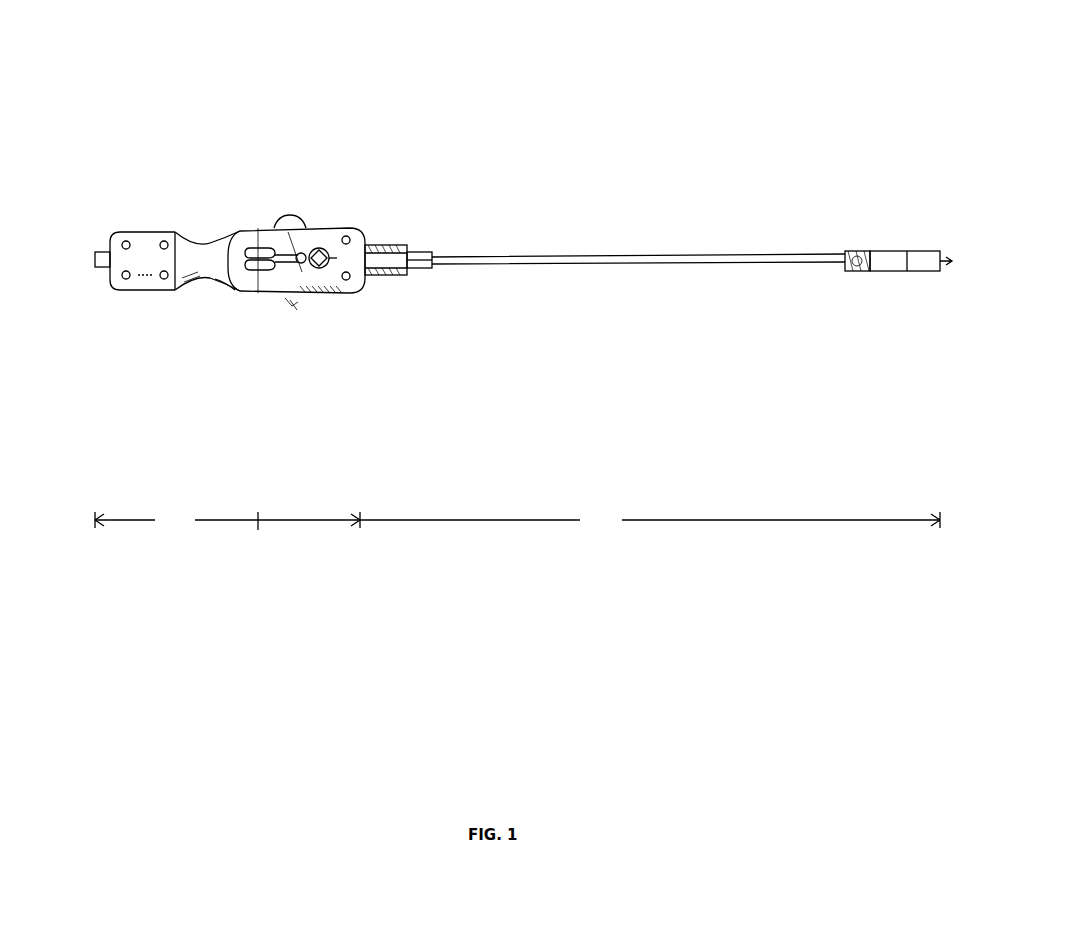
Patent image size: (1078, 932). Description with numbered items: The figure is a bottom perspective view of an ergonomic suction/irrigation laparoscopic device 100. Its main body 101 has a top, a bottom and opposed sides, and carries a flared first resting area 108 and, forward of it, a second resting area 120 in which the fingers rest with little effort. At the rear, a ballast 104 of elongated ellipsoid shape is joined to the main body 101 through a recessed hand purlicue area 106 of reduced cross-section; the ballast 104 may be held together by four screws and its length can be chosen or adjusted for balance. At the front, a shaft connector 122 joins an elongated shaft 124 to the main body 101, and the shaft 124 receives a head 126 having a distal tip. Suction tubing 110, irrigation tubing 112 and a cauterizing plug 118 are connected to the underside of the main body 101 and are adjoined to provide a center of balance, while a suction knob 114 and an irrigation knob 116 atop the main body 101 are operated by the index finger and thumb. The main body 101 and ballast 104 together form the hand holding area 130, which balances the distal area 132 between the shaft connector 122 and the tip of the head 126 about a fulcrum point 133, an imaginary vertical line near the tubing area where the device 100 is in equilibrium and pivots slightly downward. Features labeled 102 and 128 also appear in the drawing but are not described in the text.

The laparoscopic device 100 is at (194, 114).
The main body 101 is at (322, 211).
The end tab 102 is at (98, 246).
The ballast 104 is at (140, 230).
The recessed hand purlicue area 106 is at (205, 232).
The first resting area 108 is at (222, 296).
The suction tubing 110 is at (258, 228).
The irrigation tubing 112 is at (258, 296).
The suction knob 114 is at (300, 218).
The irrigation knob 116 is at (284, 300).
The cauterizing plug 118 is at (318, 296).
The second resting area 120 is at (360, 292).
The shaft connector 122 is at (388, 245).
The elongated shaft 124 is at (612, 257).
The head 126 is at (885, 250).
The distal end 128 is at (948, 270).
The hand holding area 130 is at (227, 521).
The distal area 132 is at (650, 521).
The fulcrum point 133 is at (256, 535).